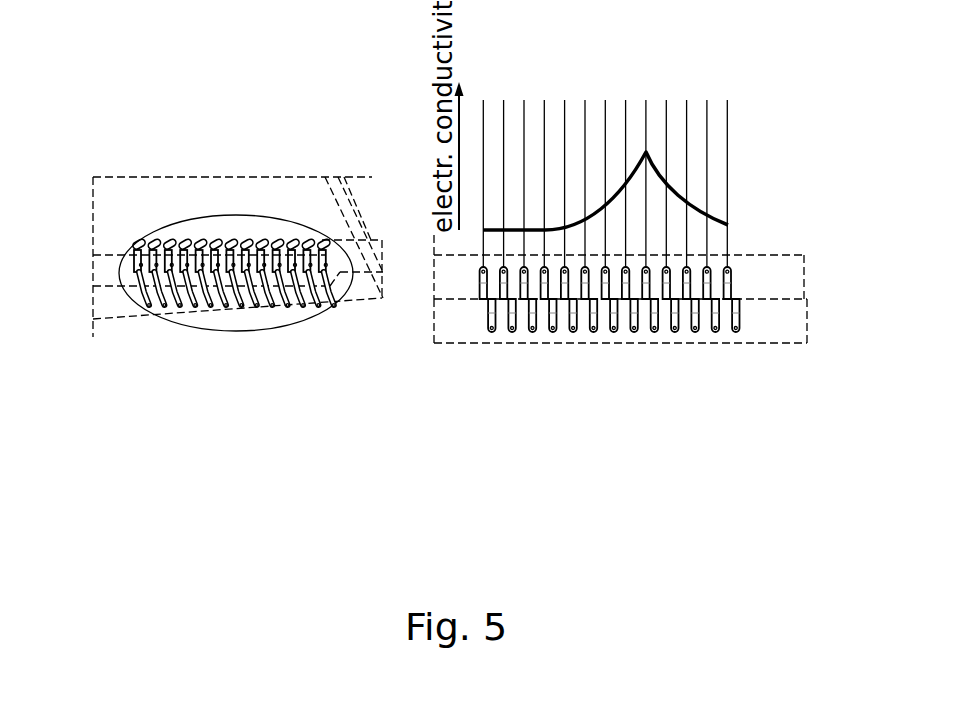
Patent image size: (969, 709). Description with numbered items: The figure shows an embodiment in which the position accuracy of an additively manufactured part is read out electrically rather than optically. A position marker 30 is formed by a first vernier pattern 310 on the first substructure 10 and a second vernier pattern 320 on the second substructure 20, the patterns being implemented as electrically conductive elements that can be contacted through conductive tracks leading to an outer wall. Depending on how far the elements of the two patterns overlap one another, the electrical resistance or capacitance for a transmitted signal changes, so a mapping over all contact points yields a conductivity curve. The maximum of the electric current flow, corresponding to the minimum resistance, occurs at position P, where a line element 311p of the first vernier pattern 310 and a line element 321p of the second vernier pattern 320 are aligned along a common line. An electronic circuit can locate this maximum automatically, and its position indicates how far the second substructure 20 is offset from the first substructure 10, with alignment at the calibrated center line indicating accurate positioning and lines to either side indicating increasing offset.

The first substructure 10 is at (107, 306).
The second substructure 20 is at (100, 272).
The position marker 30 is at (238, 332).
The first vernier pattern 310 is at (748, 322).
The second vernier pattern 320 is at (736, 280).
The line element 311p is at (649, 318).
The line element 321p is at (645, 277).
The position of maximum conductivity P is at (647, 148).